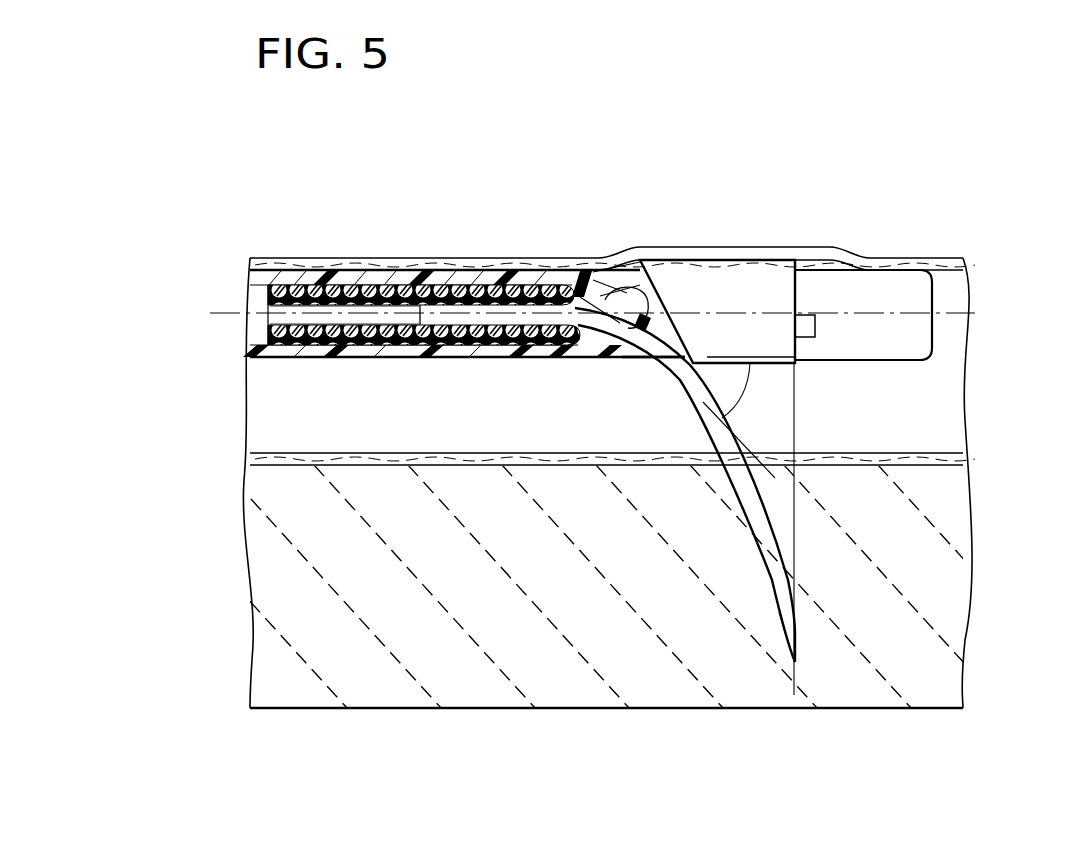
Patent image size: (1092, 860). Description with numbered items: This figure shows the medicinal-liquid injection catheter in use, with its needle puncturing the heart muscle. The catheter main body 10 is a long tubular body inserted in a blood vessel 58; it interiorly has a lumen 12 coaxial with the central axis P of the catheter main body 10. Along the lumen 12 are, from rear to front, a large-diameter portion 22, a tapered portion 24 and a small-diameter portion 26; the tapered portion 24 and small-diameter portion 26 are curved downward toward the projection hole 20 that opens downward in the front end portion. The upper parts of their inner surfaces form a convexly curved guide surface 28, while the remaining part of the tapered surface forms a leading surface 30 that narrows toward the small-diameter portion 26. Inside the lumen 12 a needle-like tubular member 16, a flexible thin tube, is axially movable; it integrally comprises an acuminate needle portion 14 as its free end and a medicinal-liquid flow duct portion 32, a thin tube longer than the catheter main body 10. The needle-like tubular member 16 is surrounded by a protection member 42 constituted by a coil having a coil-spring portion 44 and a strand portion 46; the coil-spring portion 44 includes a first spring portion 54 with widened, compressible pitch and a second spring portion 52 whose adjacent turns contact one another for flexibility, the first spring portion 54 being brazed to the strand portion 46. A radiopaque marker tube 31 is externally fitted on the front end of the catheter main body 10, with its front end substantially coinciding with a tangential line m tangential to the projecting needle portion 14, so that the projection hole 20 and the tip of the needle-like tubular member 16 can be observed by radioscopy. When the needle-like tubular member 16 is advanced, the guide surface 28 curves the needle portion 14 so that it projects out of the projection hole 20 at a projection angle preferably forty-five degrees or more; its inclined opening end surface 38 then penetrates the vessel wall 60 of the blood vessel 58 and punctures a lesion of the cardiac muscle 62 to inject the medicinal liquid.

The catheter main body 10 is at (360, 360).
The lumen 12 is at (292, 326).
The needle portion 14 is at (773, 573).
The needle-like tubular member 16 is at (674, 401).
The projection hole 20 is at (622, 366).
The large-diameter portion 22 is at (289, 368).
The tapered portion 24 is at (556, 292).
The small-diameter portion 26 is at (632, 318).
The guide surface 28 is at (593, 300).
The leading surface 30 is at (576, 347).
The marker tube 31 is at (737, 268).
The medicinal-liquid flow duct portion 32 is at (293, 287).
The opening end surface 38 is at (782, 638).
The protection member 42 is at (388, 158).
The coil-spring portion 44 is at (463, 285).
The strand portion 46 is at (342, 285).
The second spring portion 52 is at (495, 290).
The first spring portion 54 is at (470, 352).
The blood vessel 58 is at (883, 421).
The vessel wall 60 is at (853, 458).
The cardiac muscle 62 is at (662, 672).
The central axis P is at (900, 313).
The tangential line m is at (797, 598).